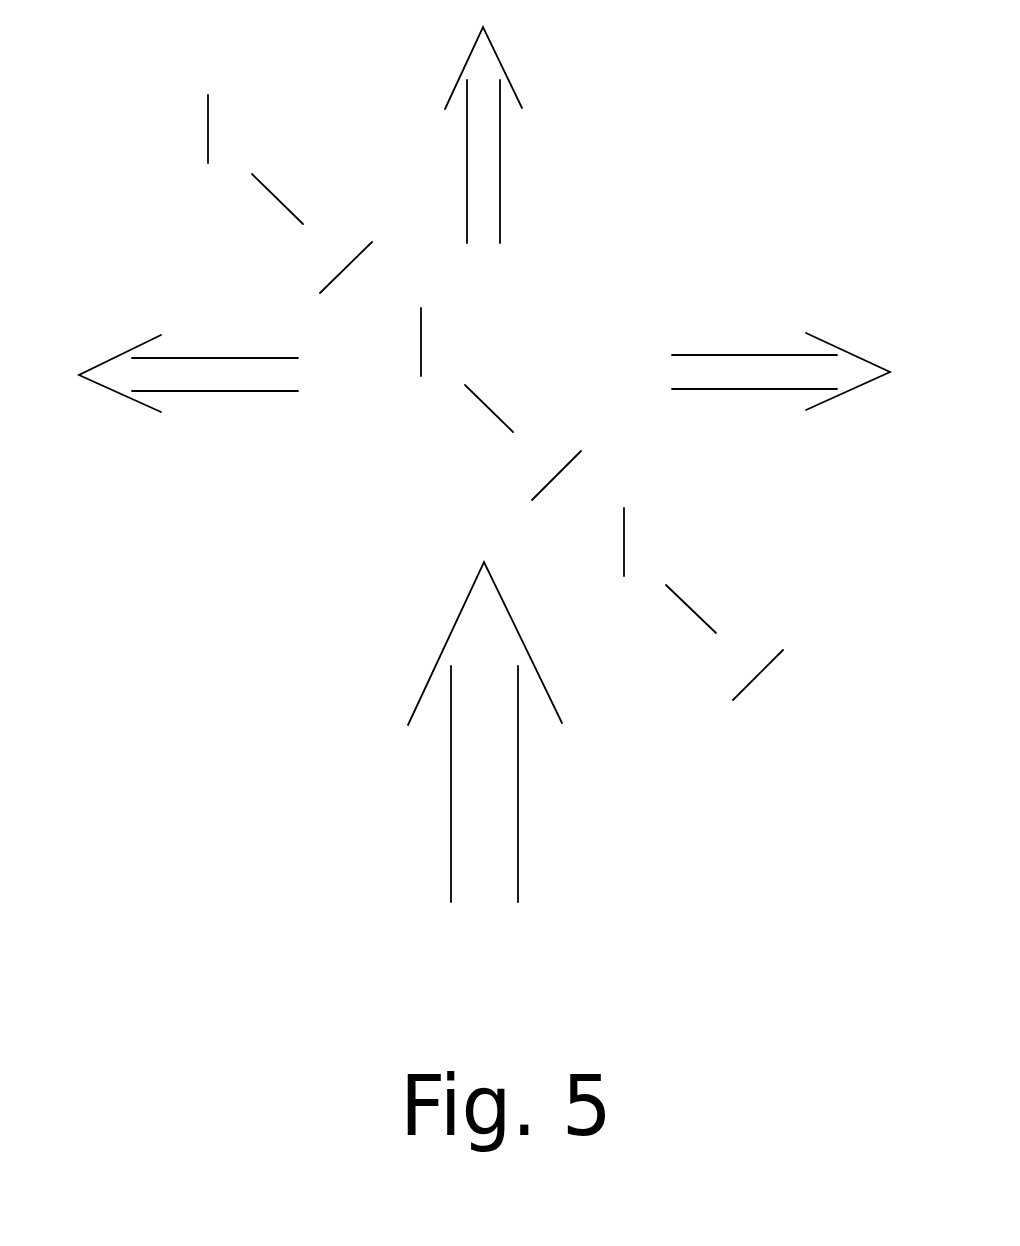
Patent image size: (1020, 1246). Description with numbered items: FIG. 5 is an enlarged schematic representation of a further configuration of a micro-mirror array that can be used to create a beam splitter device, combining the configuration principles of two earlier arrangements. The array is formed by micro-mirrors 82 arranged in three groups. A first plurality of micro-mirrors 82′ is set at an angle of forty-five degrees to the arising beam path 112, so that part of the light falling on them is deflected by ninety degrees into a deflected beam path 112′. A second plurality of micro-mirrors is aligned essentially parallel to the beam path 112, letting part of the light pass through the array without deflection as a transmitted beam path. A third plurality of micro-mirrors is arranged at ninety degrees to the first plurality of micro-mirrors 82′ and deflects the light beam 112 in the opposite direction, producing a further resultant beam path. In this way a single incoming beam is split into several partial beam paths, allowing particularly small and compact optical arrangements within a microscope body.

The micro-mirrors 82 is at (228, 205).
The first plurality of micro-mirrors 82′ is at (278, 200).
The beam path 112 is at (518, 786).
The beam path 112′ is at (228, 391).